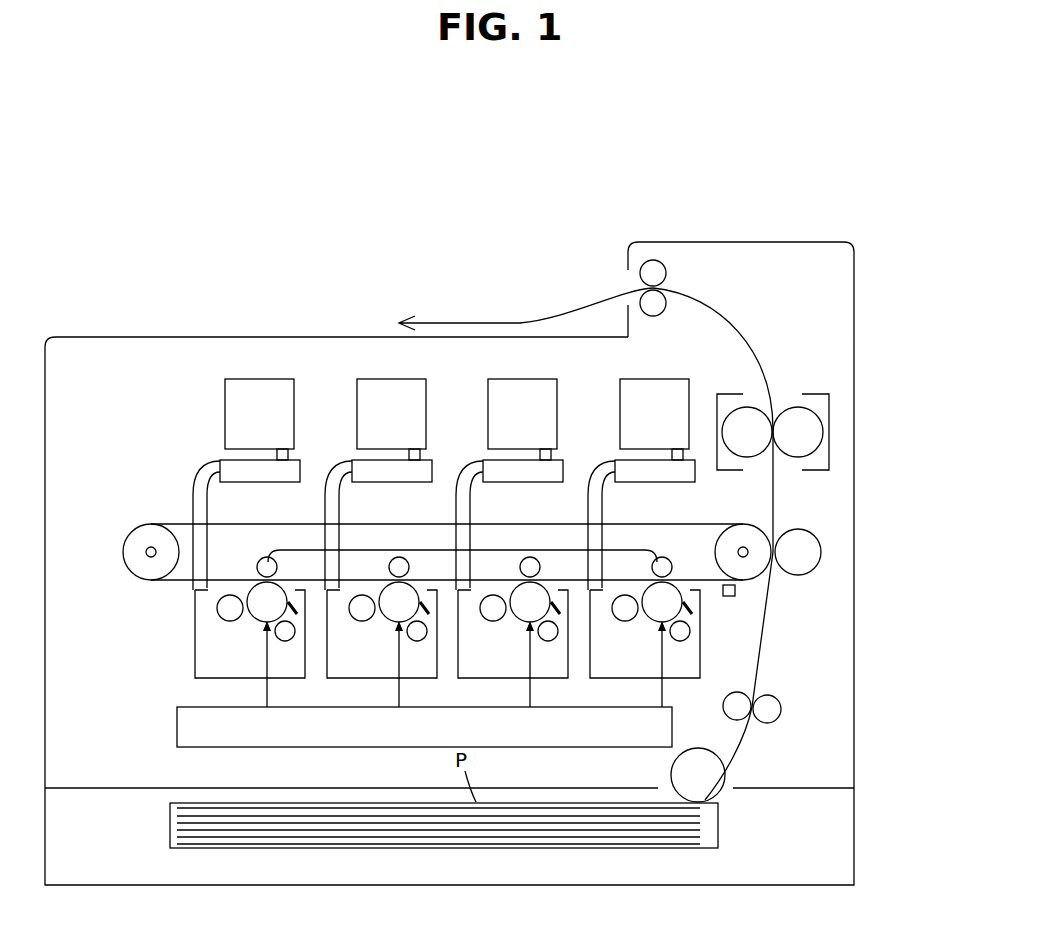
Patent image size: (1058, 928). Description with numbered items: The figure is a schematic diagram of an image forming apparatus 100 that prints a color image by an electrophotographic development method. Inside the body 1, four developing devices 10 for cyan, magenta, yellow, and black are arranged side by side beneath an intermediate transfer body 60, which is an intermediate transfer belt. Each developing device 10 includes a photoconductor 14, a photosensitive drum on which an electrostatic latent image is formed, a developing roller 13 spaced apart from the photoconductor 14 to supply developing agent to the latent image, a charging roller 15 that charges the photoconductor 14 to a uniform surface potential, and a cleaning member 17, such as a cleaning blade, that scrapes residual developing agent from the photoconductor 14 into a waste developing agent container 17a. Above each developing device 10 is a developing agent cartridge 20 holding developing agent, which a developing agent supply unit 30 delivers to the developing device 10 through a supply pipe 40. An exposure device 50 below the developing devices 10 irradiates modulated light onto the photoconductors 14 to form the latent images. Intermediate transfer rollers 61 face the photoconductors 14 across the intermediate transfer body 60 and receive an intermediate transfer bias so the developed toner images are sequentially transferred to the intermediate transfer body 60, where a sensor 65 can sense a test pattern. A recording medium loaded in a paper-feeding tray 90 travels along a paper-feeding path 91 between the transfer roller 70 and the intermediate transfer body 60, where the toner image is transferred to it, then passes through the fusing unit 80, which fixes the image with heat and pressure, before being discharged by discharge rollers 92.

The body 1 is at (868, 711).
The image forming apparatus 100 is at (222, 212).
The developing device 10 is at (171, 660).
The developing roller 13 is at (225, 612).
The photoconductor 14 is at (252, 590).
The charging roller 15 is at (282, 642).
The cleaning member 17 is at (297, 613).
The waste developing agent container 17a is at (300, 590).
The developing agent cartridge 20 is at (216, 400).
The developing agent supply unit 30 is at (222, 461).
The supply pipe 40 is at (191, 500).
The exposure device 50 is at (165, 721).
The intermediate transfer body 60 is at (172, 524).
The intermediate transfer roller 61 is at (436, 549).
The sensor 65 is at (735, 590).
The transfer roller 70 is at (821, 560).
The fusing unit 80 is at (829, 452).
The paper-feeding tray 90 is at (855, 832).
The paper-feeding path 91 is at (763, 637).
The discharge roller 92 is at (657, 260).